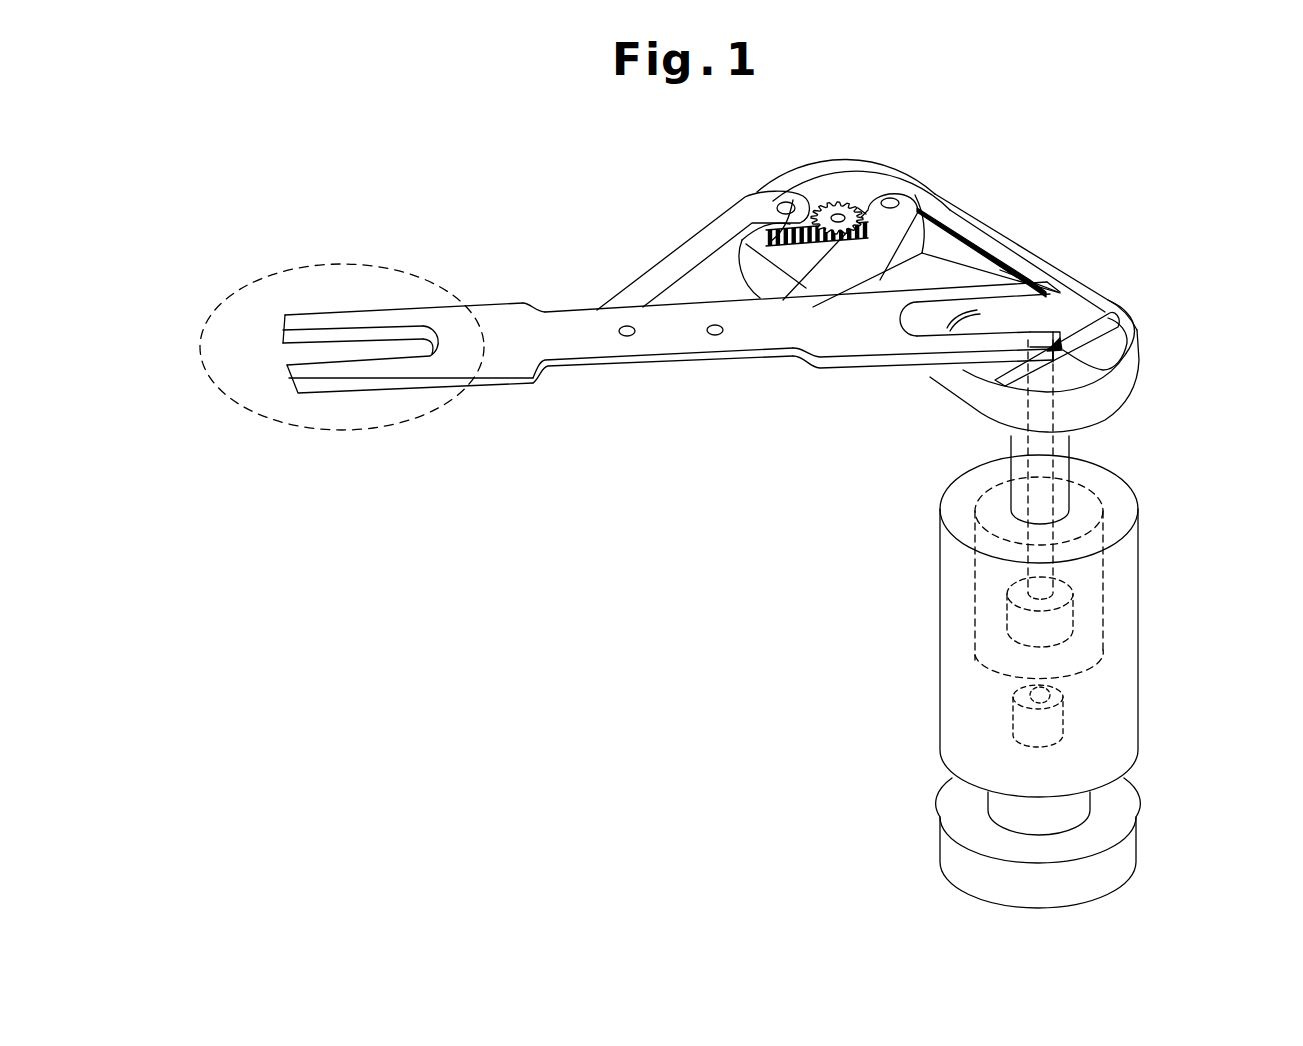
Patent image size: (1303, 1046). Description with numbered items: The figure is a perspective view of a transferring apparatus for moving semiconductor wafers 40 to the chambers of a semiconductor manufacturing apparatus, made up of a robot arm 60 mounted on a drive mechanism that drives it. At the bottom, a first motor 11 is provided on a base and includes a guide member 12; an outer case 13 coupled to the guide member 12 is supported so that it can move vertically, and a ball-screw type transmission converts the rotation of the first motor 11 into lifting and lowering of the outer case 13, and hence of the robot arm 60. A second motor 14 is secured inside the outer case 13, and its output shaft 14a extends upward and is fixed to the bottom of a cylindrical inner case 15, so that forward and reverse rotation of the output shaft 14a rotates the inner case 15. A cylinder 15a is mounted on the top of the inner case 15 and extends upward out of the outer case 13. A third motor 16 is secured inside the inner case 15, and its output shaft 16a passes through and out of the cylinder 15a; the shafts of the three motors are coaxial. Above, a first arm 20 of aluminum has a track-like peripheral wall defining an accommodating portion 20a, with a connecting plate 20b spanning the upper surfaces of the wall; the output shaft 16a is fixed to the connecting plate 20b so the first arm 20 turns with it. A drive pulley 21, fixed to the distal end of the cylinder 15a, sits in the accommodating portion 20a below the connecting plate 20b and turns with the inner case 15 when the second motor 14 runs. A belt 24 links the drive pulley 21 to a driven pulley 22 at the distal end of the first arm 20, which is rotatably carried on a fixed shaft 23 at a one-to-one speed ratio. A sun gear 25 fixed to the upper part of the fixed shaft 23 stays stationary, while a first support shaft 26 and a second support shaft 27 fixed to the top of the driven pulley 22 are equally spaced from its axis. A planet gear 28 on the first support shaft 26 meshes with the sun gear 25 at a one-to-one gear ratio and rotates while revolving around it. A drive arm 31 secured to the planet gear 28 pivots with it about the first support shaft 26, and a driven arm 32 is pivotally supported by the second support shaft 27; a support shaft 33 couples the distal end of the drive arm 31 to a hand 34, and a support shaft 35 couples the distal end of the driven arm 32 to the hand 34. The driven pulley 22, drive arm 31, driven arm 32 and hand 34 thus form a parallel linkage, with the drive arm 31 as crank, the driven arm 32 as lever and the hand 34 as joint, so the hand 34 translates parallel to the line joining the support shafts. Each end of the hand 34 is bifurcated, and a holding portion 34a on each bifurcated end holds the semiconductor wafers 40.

The first motor 11 is at (1135, 843).
The guide member 12 is at (1082, 798).
The outer case 13 is at (1140, 712).
The second motor 14 is at (1065, 705).
The output shaft 14a is at (1052, 690).
The inner case 15 is at (980, 665).
The cylinder 15a is at (1070, 447).
The third motor 16 is at (1075, 608).
The output shaft 16a is at (1053, 583).
The first arm 20 is at (1061, 281).
The accommodating portion 20a is at (937, 271).
The connecting plate 20b is at (1112, 314).
The drive pulley 21 is at (1128, 356).
The driven pulley 22 is at (845, 192).
The fixed shaft 23 is at (836, 210).
The belt 24 is at (1000, 262).
The sun gear 25 is at (863, 210).
The first support shaft 26 is at (763, 190).
The second support shaft 27 is at (902, 205).
The planet gear 28 is at (746, 262).
The drive arm 31 is at (678, 252).
The driven arm 32 is at (857, 270).
The support shaft 33 is at (618, 333).
The hand 34 is at (673, 362).
The holding portion 34a is at (390, 313).
The support shaft 35 is at (725, 330).
The semiconductor wafer 40 is at (335, 425).
The robot arm 60 is at (765, 302).